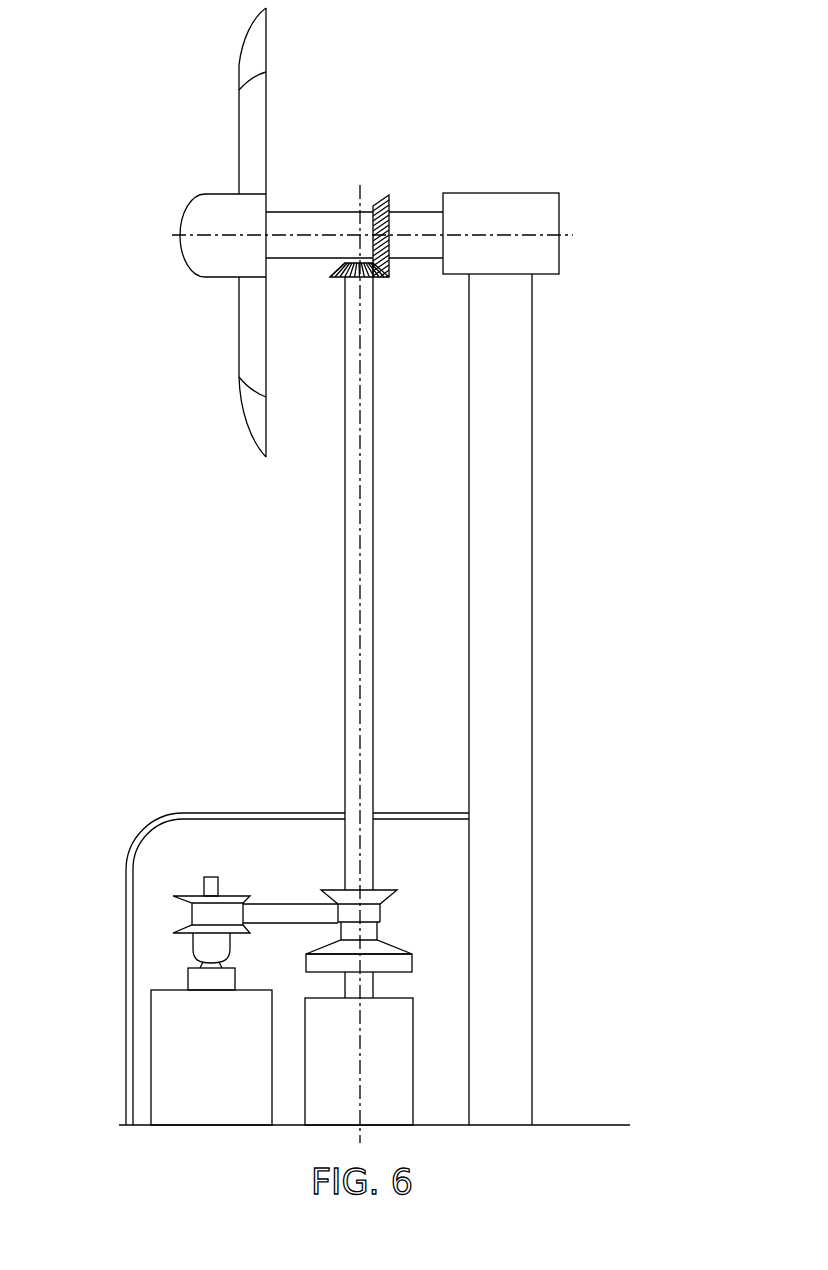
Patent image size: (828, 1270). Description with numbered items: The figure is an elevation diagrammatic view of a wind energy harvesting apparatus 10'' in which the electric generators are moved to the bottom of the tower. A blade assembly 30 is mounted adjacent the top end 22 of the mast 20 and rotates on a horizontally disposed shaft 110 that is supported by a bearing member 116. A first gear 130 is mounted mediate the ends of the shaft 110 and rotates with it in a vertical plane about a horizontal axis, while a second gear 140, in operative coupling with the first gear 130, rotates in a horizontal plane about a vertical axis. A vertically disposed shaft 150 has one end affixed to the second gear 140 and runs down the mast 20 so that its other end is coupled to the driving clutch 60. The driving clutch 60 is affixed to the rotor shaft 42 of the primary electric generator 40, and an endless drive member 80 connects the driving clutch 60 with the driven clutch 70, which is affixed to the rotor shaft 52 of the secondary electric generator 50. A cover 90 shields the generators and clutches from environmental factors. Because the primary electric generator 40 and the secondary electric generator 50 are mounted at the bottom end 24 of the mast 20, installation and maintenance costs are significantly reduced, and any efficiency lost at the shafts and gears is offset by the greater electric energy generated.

The wind energy harvesting apparatus 10'' is at (632, 142).
The blade assembly 30 is at (241, 66).
The horizontally disposed shaft 110 is at (303, 217).
The first gear 130 is at (379, 197).
The second gear 140 is at (337, 280).
The bearing member 116 is at (517, 193).
The top end of the mast 22 is at (506, 283).
The mast 20 is at (532, 582).
The bottom end of the mast 24 is at (518, 1110).
The vertically disposed shaft 150 is at (345, 553).
The cover 90 is at (236, 812).
The driven clutch 70 is at (197, 896).
The drive member 80 is at (275, 904).
The driving clutch 60 is at (385, 890).
The rotor shaft 42 is at (373, 985).
The primary electric generator 40 is at (374, 1050).
The rotor shaft 52 is at (188, 980).
The secondary electric generator 50 is at (203, 1070).